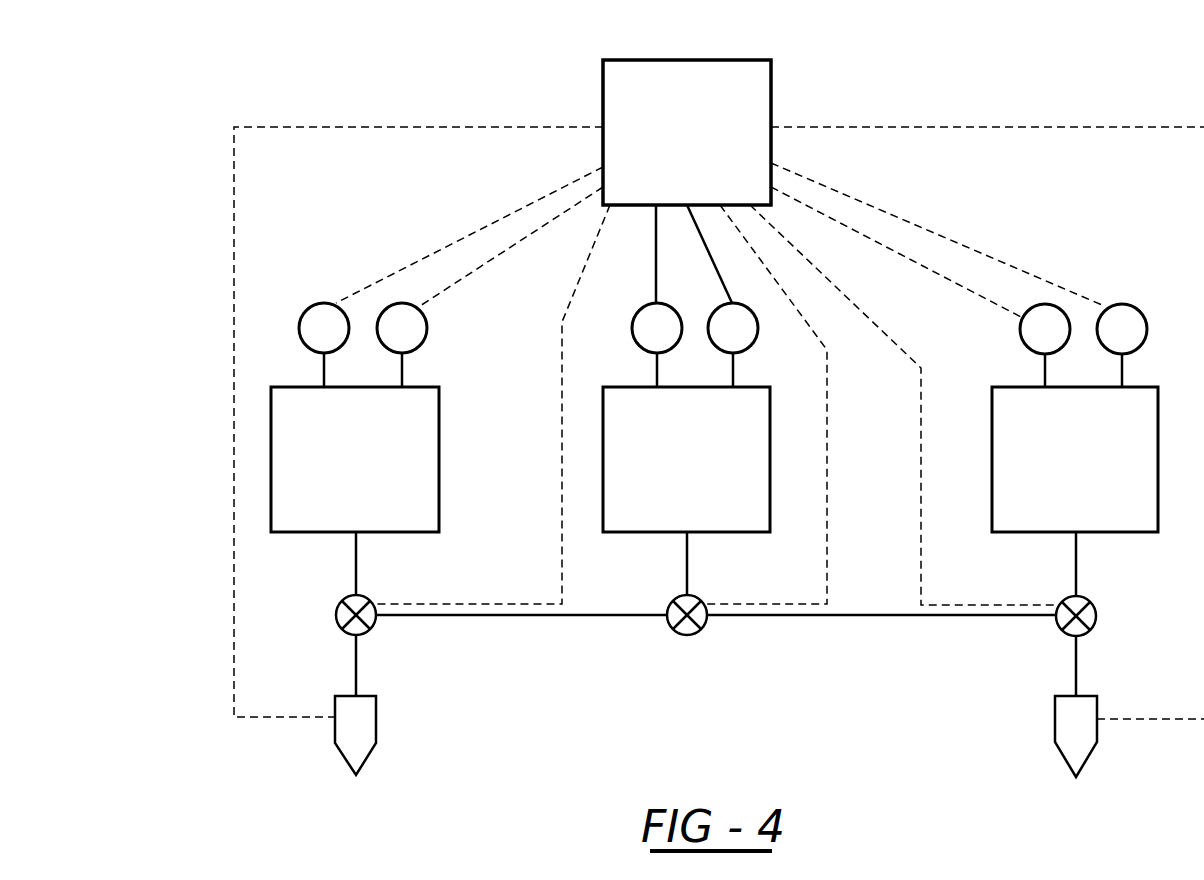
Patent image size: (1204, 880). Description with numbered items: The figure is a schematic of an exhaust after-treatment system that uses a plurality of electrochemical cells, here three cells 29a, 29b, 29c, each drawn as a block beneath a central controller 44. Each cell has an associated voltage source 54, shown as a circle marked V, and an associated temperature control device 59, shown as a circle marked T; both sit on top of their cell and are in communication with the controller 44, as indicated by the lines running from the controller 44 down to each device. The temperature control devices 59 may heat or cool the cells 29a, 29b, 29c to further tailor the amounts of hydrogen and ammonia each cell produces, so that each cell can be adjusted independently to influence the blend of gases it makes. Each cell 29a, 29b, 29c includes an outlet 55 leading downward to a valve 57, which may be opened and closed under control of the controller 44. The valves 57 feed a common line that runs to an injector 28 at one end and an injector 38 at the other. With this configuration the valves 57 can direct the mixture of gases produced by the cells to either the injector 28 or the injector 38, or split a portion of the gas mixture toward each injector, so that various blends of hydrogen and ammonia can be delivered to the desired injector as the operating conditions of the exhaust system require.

The controller 44 is at (668, 144).
The electrochemical cell 29a is at (331, 475).
The electrochemical cell 29b is at (665, 475).
The electrochemical cell 29c is at (1053, 475).
The voltage source 54 is at (674, 310).
The temperature control device 59 is at (779, 315).
The outlet 55 is at (716, 564).
The valve 57 is at (755, 644).
The injector 28 is at (376, 725).
The injector 38 is at (1055, 718).